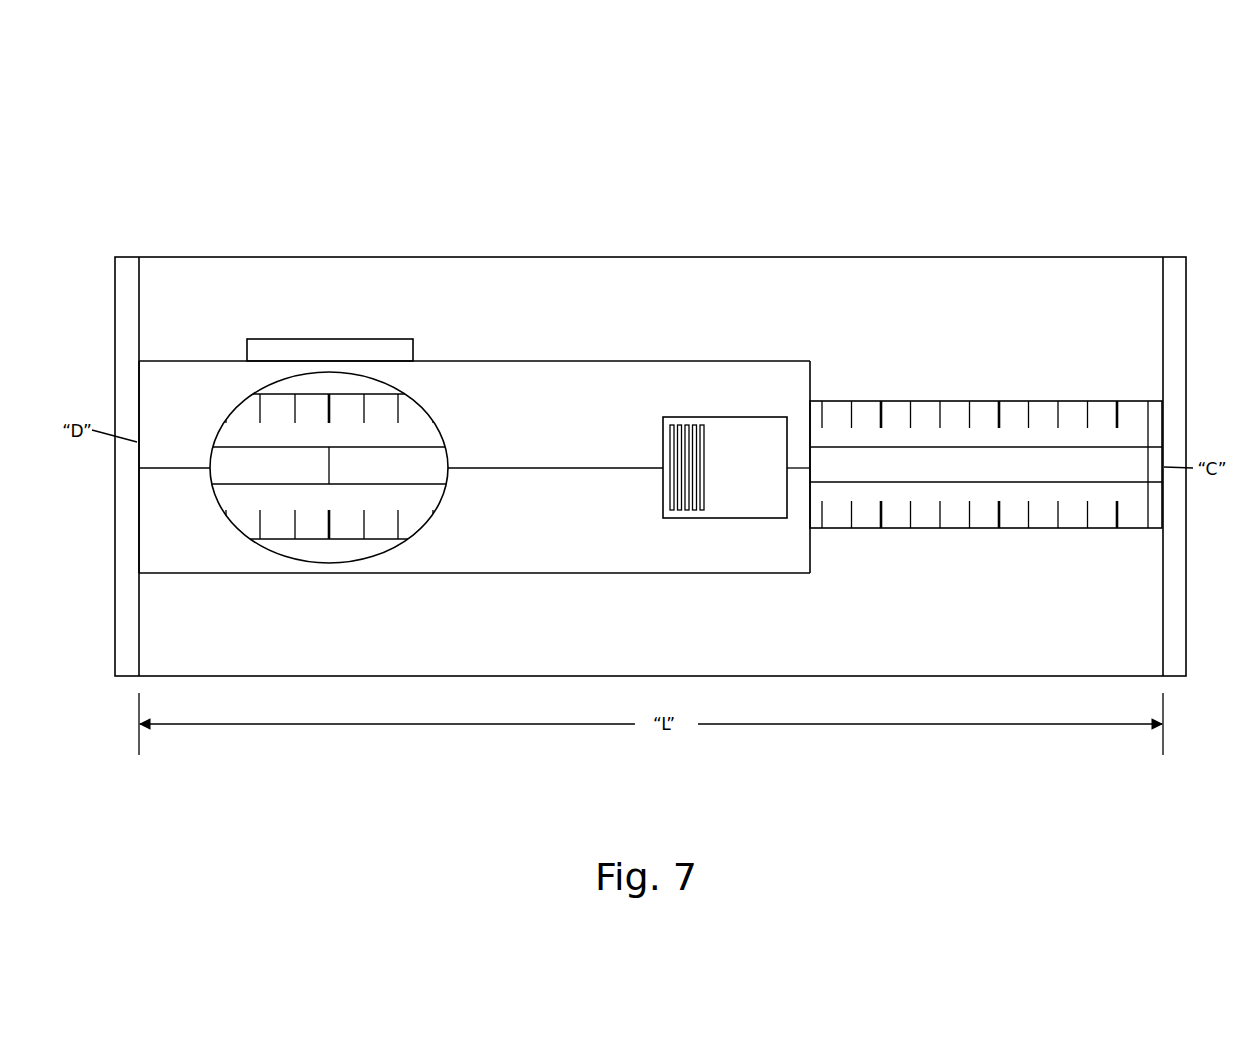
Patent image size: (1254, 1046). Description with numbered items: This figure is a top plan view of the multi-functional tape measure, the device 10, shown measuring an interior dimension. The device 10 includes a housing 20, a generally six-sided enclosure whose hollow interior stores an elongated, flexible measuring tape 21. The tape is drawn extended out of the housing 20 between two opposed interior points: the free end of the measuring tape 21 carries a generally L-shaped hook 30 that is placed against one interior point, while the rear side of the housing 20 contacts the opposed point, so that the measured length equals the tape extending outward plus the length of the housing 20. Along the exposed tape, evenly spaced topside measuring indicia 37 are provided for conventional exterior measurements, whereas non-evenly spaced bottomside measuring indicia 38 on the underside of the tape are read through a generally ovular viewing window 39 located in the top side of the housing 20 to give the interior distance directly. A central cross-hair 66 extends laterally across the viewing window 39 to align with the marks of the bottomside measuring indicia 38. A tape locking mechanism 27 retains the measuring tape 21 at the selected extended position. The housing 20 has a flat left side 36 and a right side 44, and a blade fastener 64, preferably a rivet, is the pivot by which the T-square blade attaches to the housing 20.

The device 10 is at (1112, 110).
The housing 20 is at (530, 353).
The measuring tape 21 is at (1045, 398).
The tape locking mechanism 27 is at (737, 432).
The hook 30 is at (1153, 512).
The left side 36 is at (160, 360).
The topside measuring indicia 37 is at (945, 468).
The bottomside measuring indicia 38 is at (305, 522).
The viewing window 39 is at (424, 525).
The right side 44 is at (177, 575).
The blade fastener 64 is at (290, 350).
The cross-hair 66 is at (331, 460).